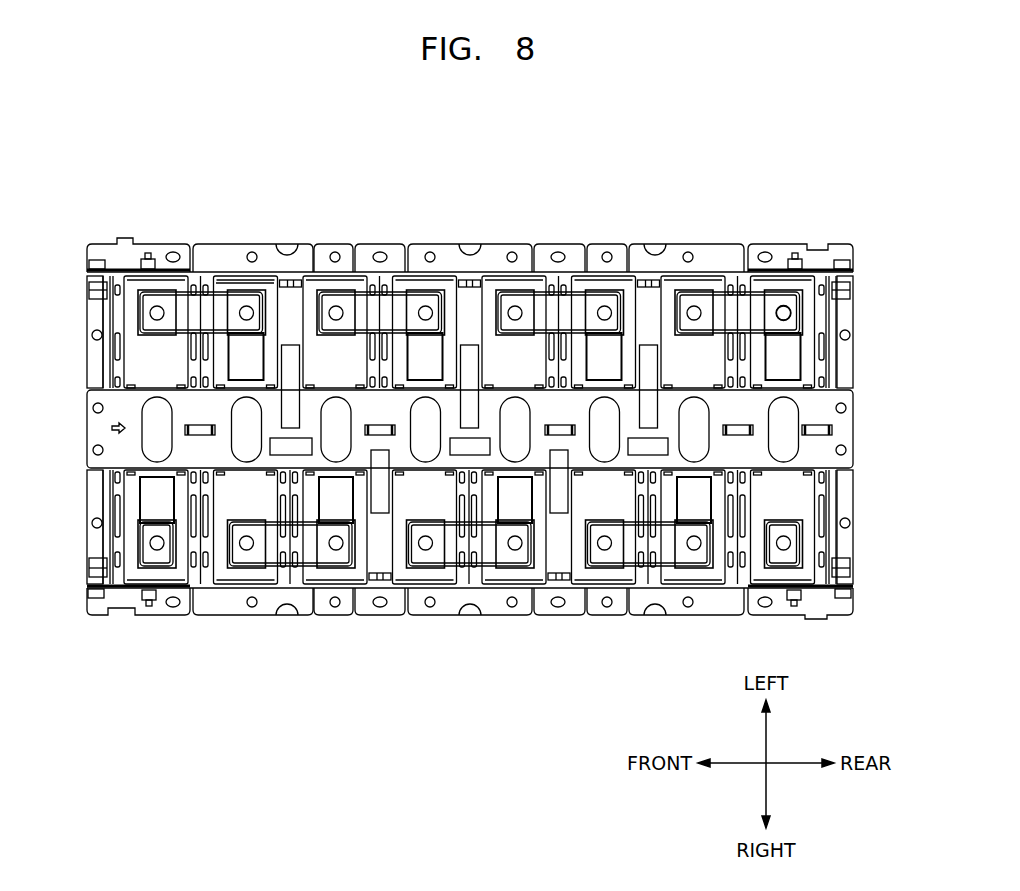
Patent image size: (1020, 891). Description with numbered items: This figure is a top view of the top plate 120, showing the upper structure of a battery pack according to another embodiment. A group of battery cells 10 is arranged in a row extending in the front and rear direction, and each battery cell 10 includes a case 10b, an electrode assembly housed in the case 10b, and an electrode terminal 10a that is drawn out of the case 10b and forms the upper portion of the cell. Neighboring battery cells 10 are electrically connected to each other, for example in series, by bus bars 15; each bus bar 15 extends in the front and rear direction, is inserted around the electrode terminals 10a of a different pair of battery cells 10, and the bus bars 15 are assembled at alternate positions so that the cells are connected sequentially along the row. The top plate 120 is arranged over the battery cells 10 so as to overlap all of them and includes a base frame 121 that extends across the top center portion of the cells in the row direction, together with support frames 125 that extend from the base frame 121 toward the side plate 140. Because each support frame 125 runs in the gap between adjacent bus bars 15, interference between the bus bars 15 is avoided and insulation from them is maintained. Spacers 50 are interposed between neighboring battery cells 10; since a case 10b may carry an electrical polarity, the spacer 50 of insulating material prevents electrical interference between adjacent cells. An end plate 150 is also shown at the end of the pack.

The battery cell 10 is at (177, 284).
The electrode terminal 10a is at (783, 311).
The case 10b is at (255, 282).
The bus bar 15 is at (718, 310).
The spacer 50 is at (118, 282).
The top plate 120 is at (840, 390).
The base frame 121 is at (840, 428).
The support frame 125 is at (648, 318).
The side plate 140 is at (498, 252).
The end plate 150 is at (93, 323).